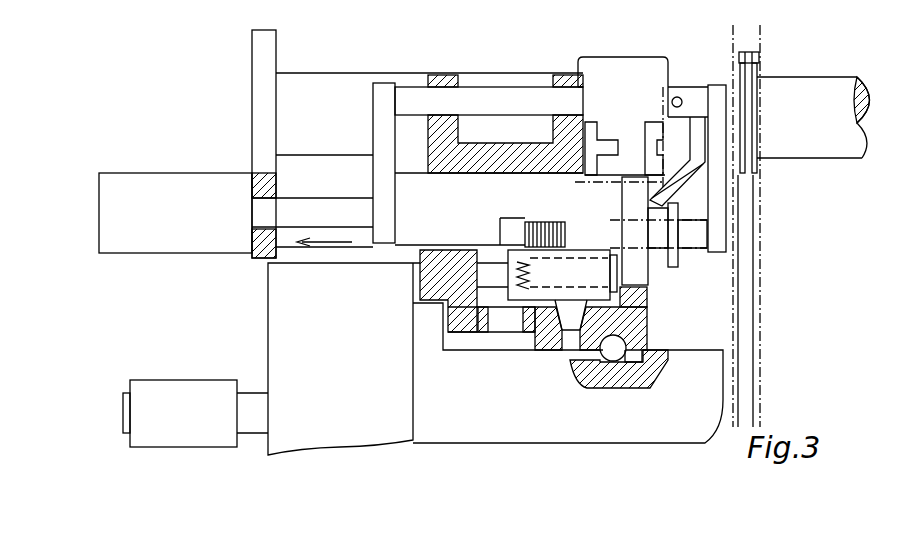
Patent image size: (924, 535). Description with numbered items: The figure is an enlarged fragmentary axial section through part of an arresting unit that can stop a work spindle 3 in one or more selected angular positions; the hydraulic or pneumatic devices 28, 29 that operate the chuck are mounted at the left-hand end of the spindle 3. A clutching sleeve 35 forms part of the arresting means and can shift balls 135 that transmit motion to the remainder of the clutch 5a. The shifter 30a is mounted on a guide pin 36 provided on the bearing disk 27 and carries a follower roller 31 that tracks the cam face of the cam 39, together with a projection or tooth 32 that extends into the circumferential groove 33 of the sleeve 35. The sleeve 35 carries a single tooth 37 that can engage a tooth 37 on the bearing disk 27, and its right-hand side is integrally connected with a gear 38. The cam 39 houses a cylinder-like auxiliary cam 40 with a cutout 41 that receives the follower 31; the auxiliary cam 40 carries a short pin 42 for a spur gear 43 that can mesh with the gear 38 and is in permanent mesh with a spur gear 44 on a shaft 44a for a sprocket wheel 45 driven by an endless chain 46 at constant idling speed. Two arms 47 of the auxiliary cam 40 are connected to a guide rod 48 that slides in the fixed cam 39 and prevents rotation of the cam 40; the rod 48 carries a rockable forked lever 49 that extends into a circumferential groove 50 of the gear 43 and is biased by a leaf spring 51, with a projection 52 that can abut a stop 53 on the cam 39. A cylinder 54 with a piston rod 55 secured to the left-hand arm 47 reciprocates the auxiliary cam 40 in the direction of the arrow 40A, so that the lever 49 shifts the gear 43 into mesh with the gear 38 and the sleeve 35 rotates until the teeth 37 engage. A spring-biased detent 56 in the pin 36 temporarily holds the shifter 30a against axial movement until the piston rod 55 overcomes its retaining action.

The work spindle 3 is at (660, 377).
The clutch 5a is at (640, 353).
The bearing disk 27 is at (430, 262).
The hydraulic or pneumatic device 28 is at (318, 437).
The hydraulic or pneumatic device 29 is at (188, 437).
The shifter 30a is at (625, 305).
The follower roller 31 is at (550, 232).
The projection or tooth 32 is at (572, 327).
The circumferential groove 33 is at (558, 330).
The clutching sleeve 35 is at (540, 345).
The guide pin 36 is at (485, 268).
The tooth 37 is at (528, 332).
The gear 38 is at (640, 293).
The cam 39 is at (487, 152).
The auxiliary cam 40 is at (402, 200).
The arrow 40A is at (318, 242).
The cutout 41 is at (508, 228).
The pin 42 is at (700, 233).
The spur gear 43 is at (633, 265).
The spur gear 44 is at (672, 60).
The shaft 44a is at (837, 82).
The sprocket wheel 45 is at (748, 102).
The endless chain 46 is at (759, 57).
The arm 47 is at (383, 135).
The guide rod 48 is at (512, 95).
The forked lever 49 is at (683, 130).
The circumferential groove 50 is at (662, 256).
The leaf spring 51 is at (695, 182).
The projection 52 is at (658, 145).
The stop 53 is at (608, 147).
The cylinder 54 is at (110, 207).
The piston rod 55 is at (278, 212).
The spring-biased detent 56 is at (522, 288).
The ball 135 is at (618, 352).